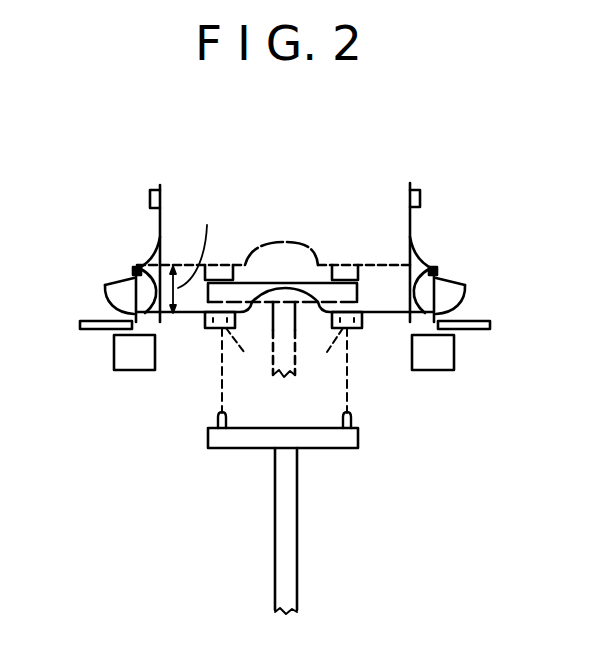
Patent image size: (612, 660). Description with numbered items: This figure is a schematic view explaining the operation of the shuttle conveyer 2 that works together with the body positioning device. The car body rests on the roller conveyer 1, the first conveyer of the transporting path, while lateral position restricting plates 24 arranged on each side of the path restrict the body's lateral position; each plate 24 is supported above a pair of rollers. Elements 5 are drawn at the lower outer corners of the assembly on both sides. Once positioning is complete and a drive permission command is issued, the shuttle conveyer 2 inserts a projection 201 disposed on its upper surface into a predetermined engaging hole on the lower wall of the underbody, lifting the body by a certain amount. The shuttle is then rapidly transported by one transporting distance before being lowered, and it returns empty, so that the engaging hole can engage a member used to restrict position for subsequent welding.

The roller conveyer 1 is at (447, 375).
The shuttle conveyer 2 is at (288, 500).
The magnet 5 is at (127, 370).
The lateral position restricting plate 24 is at (96, 320).
The projection 201 is at (213, 416).